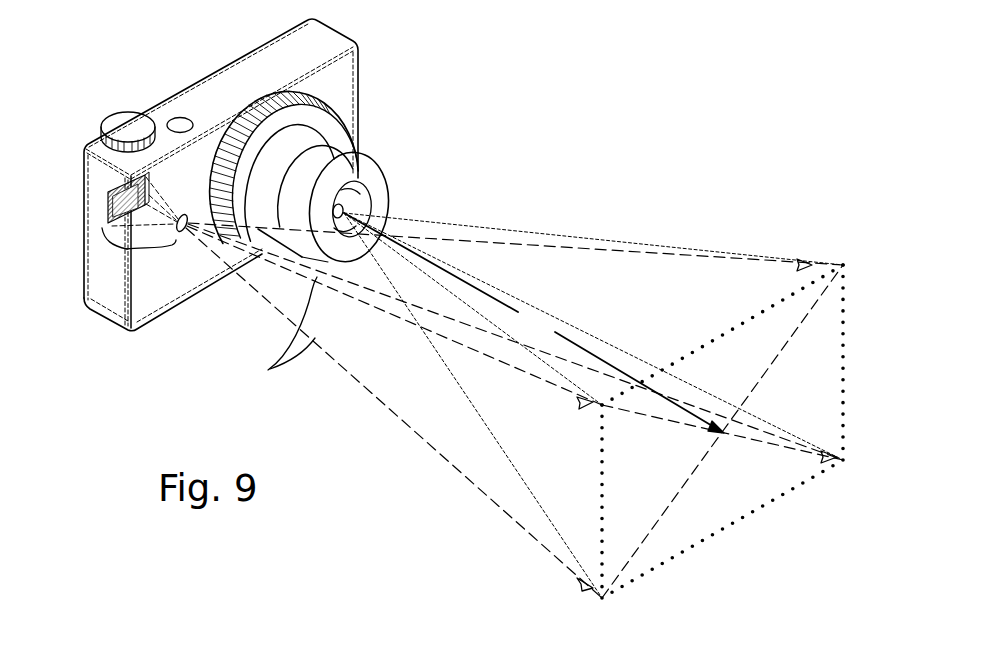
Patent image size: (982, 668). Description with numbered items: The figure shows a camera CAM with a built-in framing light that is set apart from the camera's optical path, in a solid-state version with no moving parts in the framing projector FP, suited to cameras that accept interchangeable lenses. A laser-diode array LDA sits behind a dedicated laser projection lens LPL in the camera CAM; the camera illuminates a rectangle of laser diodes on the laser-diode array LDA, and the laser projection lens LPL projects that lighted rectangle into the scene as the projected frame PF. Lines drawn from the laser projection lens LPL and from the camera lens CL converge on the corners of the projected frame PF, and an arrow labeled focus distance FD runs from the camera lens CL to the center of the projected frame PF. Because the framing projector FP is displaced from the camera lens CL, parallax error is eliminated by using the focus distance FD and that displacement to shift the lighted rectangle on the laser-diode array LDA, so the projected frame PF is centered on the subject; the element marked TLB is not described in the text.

The camera CAM is at (373, 47).
The camera lens CL is at (344, 214).
The laser-diode array LDA is at (107, 212).
The framing projector FP is at (127, 249).
The laser projection lens LPL is at (182, 234).
The tilted light beam TLB is at (268, 370).
The focus distance FD is at (534, 323).
The projected frame PF is at (760, 508).